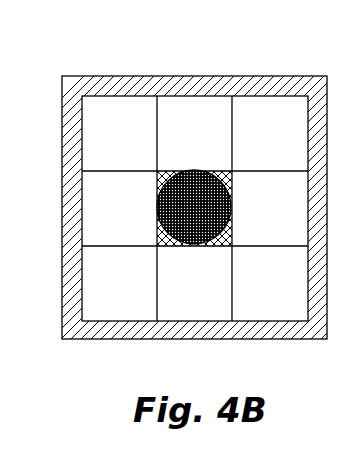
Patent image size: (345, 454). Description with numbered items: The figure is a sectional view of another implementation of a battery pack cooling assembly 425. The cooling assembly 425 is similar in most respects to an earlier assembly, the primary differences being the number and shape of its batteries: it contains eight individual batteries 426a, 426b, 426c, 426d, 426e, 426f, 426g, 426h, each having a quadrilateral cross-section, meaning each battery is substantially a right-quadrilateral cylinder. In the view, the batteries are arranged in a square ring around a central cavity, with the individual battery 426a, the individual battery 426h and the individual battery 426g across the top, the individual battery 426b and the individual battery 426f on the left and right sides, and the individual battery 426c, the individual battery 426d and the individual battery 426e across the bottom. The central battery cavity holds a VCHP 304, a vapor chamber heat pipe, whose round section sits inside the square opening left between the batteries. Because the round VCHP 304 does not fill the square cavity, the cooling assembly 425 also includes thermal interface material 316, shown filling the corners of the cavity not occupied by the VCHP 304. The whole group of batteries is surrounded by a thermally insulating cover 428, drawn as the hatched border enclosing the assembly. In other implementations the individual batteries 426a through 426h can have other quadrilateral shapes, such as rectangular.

The battery pack cooling assembly 425 is at (181, 201).
The thermally insulating cover 428 is at (120, 335).
The thermal interface material 316 is at (164, 176).
The VCHP 304 is at (194, 207).
The individual battery 426a is at (119, 133).
The individual battery 426b is at (119, 208).
The individual battery 426c is at (119, 283).
The individual battery 426d is at (194, 283).
The individual battery 426e is at (270, 283).
The individual battery 426f is at (270, 208).
The individual battery 426g is at (270, 133).
The individual battery 426h is at (194, 133).